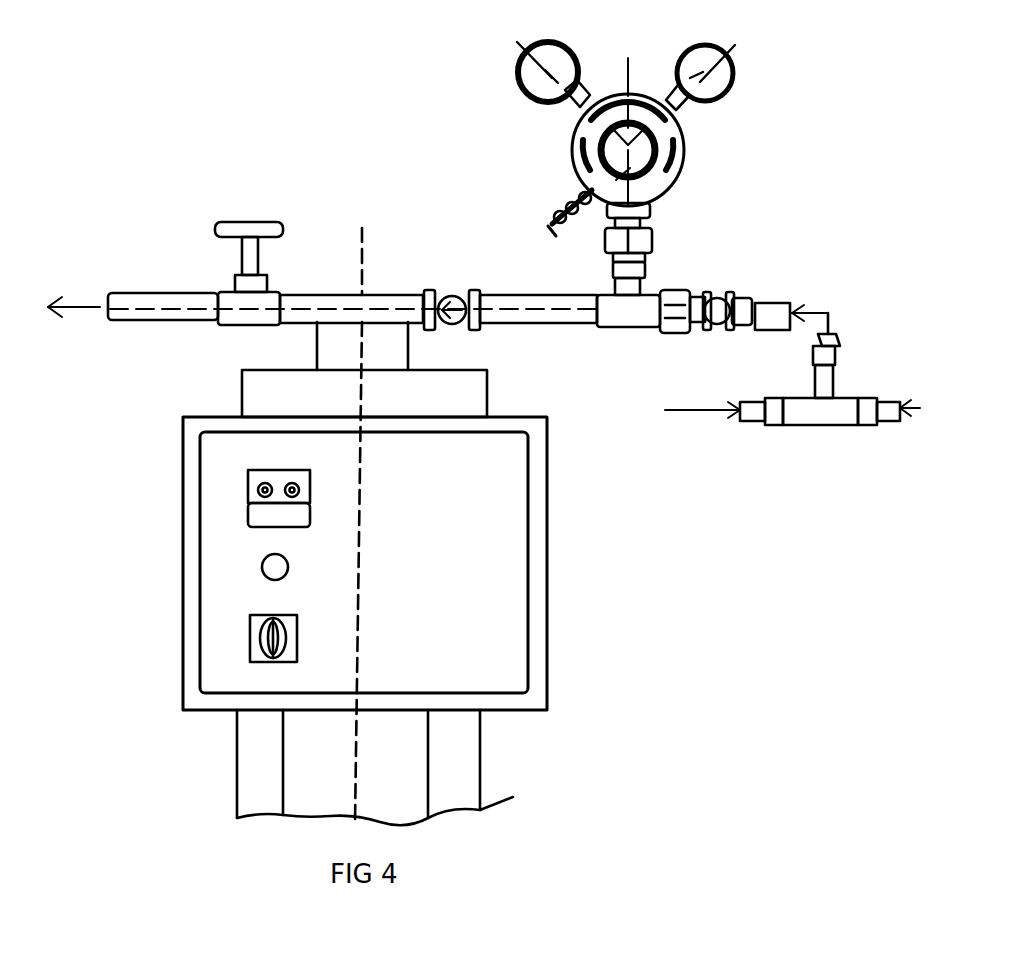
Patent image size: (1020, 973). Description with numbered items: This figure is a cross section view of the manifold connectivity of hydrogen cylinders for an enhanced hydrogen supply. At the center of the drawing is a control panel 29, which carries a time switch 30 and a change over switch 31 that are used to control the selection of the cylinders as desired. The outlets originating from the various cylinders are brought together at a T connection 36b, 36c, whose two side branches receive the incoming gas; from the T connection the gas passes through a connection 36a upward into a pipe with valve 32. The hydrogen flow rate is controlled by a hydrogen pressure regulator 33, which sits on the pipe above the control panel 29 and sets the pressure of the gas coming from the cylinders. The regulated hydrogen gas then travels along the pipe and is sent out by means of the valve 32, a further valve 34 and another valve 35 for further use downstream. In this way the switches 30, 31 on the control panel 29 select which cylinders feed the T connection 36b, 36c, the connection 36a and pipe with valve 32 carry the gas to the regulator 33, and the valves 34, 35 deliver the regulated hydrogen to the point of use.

The control panel 29 is at (444, 526).
The time switch 30 is at (248, 497).
The change over switch 31 is at (250, 642).
The pipe with valve 32 is at (455, 302).
The hydrogen pressure regulator 33 is at (583, 157).
The valve 34 is at (240, 256).
The valve 35 is at (452, 296).
The connection 36a is at (838, 357).
The T connection 36b is at (773, 425).
The T connection 36c is at (867, 425).